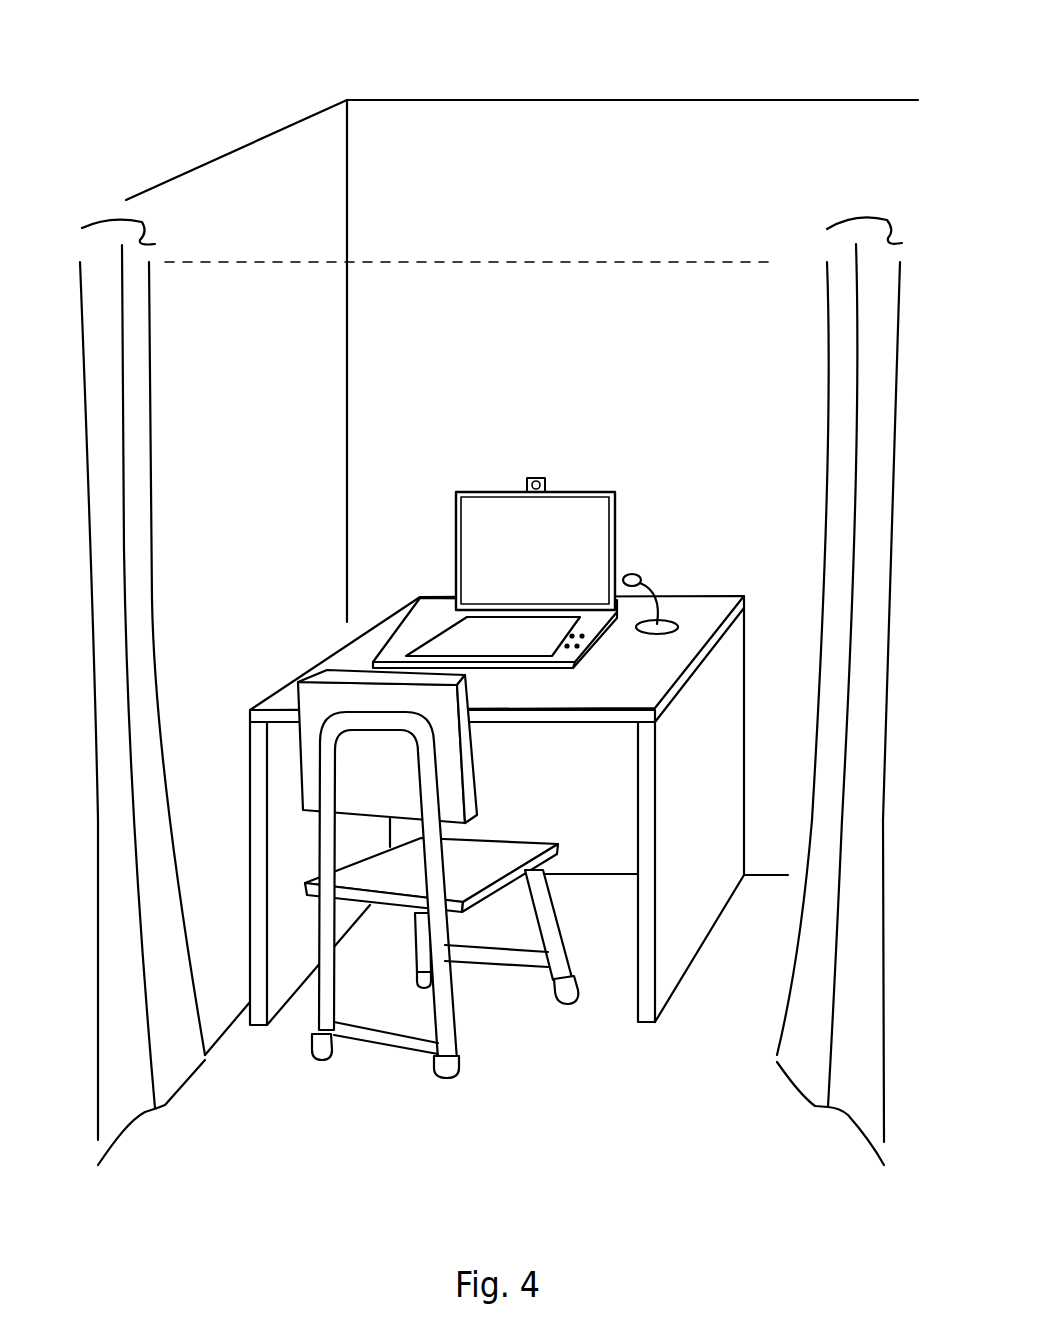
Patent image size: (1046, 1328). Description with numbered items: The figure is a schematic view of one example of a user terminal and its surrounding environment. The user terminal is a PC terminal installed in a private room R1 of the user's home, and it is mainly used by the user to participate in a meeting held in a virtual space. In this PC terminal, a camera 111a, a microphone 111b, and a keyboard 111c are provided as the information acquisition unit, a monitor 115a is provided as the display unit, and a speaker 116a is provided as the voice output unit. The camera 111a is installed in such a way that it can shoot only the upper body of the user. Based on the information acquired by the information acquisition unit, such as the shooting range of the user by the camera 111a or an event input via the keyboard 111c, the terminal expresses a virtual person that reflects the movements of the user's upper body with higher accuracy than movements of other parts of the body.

The private room R1 is at (620, 72).
The camera 111a is at (535, 478).
The monitor 115a is at (600, 497).
The microphone 111b is at (645, 578).
The keyboard 111c is at (463, 635).
The speaker 116a is at (592, 637).